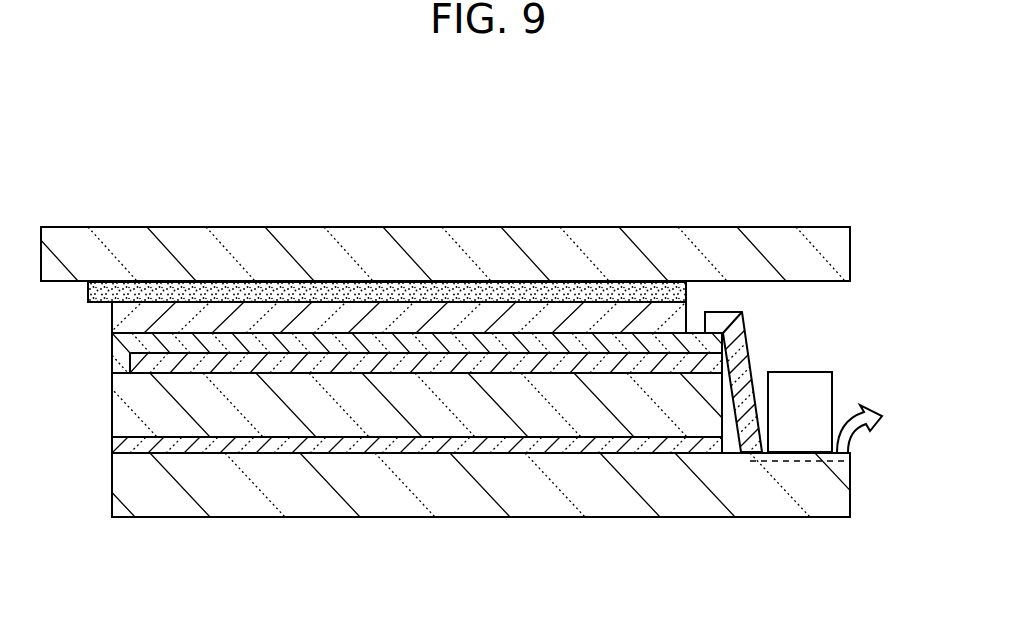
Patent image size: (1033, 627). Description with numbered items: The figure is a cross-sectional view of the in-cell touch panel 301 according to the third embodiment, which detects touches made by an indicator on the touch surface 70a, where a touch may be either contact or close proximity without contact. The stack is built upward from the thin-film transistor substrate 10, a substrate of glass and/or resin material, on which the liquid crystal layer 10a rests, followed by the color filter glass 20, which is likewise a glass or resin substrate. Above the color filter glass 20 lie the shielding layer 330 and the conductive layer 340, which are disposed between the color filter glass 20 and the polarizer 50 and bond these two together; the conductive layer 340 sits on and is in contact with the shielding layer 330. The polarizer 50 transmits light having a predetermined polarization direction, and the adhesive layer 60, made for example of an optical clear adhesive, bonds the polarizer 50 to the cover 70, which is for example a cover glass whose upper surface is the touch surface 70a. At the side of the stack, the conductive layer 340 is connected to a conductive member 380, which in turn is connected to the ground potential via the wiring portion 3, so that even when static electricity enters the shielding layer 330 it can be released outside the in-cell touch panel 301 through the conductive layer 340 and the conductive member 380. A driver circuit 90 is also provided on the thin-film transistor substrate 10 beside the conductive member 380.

The in-cell touch panel 301 is at (103, 83).
The cover 70 is at (258, 250).
The touch surface 70a is at (497, 227).
The adhesive layer 60 is at (168, 290).
The polarizer 50 is at (310, 322).
The conductive layer 340 is at (413, 340).
The shielding layer 330 is at (267, 372).
The color filter glass 20 is at (396, 410).
The liquid crystal layer 10a is at (480, 453).
The thin-film transistor substrate 10 is at (592, 470).
The conductive member 380 is at (757, 355).
The driver circuit 90 is at (803, 372).
The wiring portion 3 is at (862, 404).